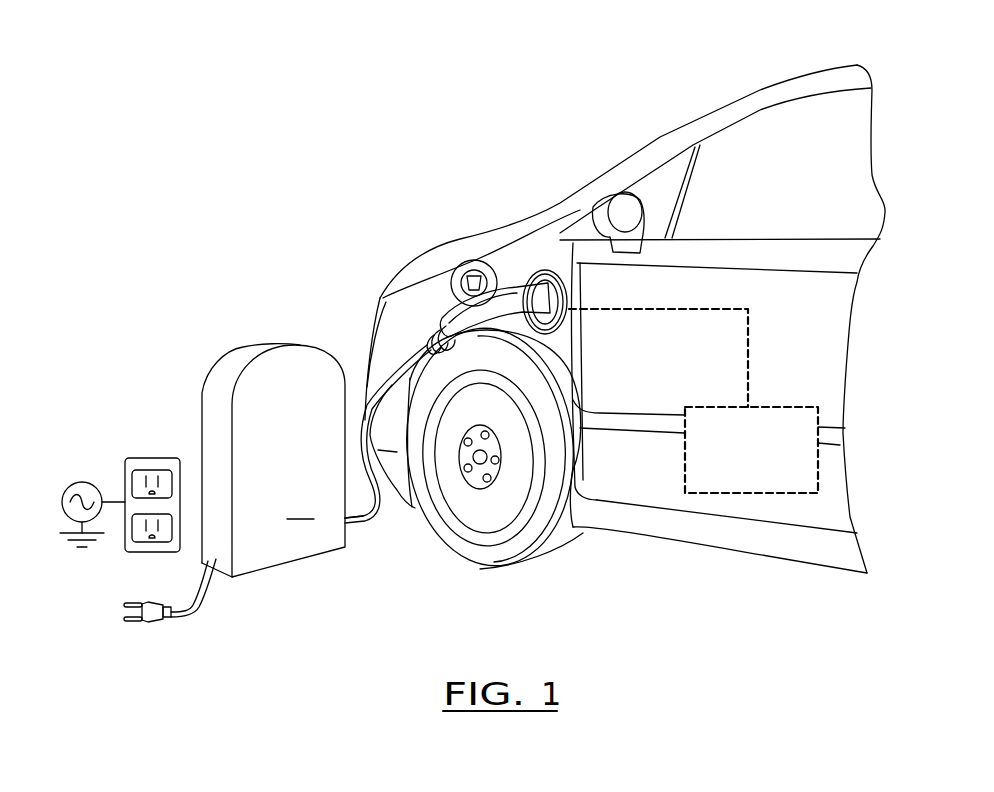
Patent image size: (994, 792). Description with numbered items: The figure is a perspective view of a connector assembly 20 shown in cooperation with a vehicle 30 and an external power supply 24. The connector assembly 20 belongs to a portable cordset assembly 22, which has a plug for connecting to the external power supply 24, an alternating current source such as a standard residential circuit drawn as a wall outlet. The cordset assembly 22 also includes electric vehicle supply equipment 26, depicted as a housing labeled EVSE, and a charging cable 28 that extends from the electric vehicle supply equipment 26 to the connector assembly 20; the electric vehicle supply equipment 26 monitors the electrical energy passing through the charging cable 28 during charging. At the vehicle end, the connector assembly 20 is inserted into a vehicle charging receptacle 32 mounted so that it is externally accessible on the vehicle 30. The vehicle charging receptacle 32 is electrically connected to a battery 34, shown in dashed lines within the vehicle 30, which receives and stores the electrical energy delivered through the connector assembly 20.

The connector assembly 20 is at (518, 268).
The cordset assembly 22 is at (386, 362).
The external power supply 24 is at (153, 436).
The electric vehicle supply equipment 26 is at (234, 483).
The charging cable 28 is at (373, 530).
The vehicle 30 is at (728, 113).
The vehicle charging receptacle 32 is at (540, 268).
The battery 34 is at (761, 470).